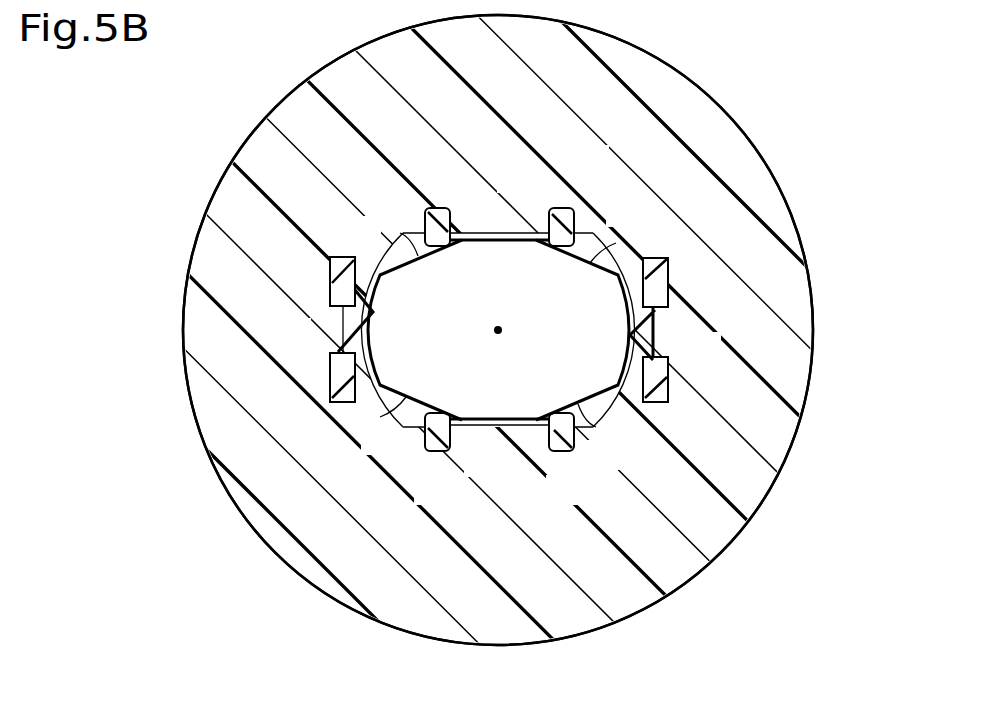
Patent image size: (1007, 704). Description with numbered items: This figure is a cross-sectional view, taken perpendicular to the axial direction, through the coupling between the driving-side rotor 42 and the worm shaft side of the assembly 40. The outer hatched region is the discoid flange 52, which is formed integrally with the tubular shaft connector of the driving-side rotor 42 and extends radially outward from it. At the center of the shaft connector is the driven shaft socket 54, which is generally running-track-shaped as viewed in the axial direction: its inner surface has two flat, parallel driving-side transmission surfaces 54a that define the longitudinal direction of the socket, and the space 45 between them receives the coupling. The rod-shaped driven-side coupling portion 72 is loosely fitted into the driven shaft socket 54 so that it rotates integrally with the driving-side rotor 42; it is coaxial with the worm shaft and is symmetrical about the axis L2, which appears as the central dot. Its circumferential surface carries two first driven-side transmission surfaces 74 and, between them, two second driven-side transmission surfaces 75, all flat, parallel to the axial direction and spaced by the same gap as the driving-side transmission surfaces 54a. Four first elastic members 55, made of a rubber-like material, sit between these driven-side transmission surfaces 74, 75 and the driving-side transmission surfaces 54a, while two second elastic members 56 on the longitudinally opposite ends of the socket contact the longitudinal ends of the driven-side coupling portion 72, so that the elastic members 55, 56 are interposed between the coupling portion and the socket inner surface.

The connector assembly 40 is at (795, 69).
The driving-side rotor 42 is at (814, 296).
The passage 45 is at (506, 233).
The flange 52 is at (773, 197).
The driven shaft socket 54 is at (373, 265).
The driving-side transmission surface 54a is at (480, 242).
The first elastic member 55 is at (444, 208).
The second elastic member 56 is at (338, 318).
The driven-side coupling portion 72 is at (487, 426).
The first driven-side transmission surface 74 is at (402, 233).
The second driven-side transmission surface 75 is at (597, 252).
The axis of the worm shaft L2 is at (505, 330).